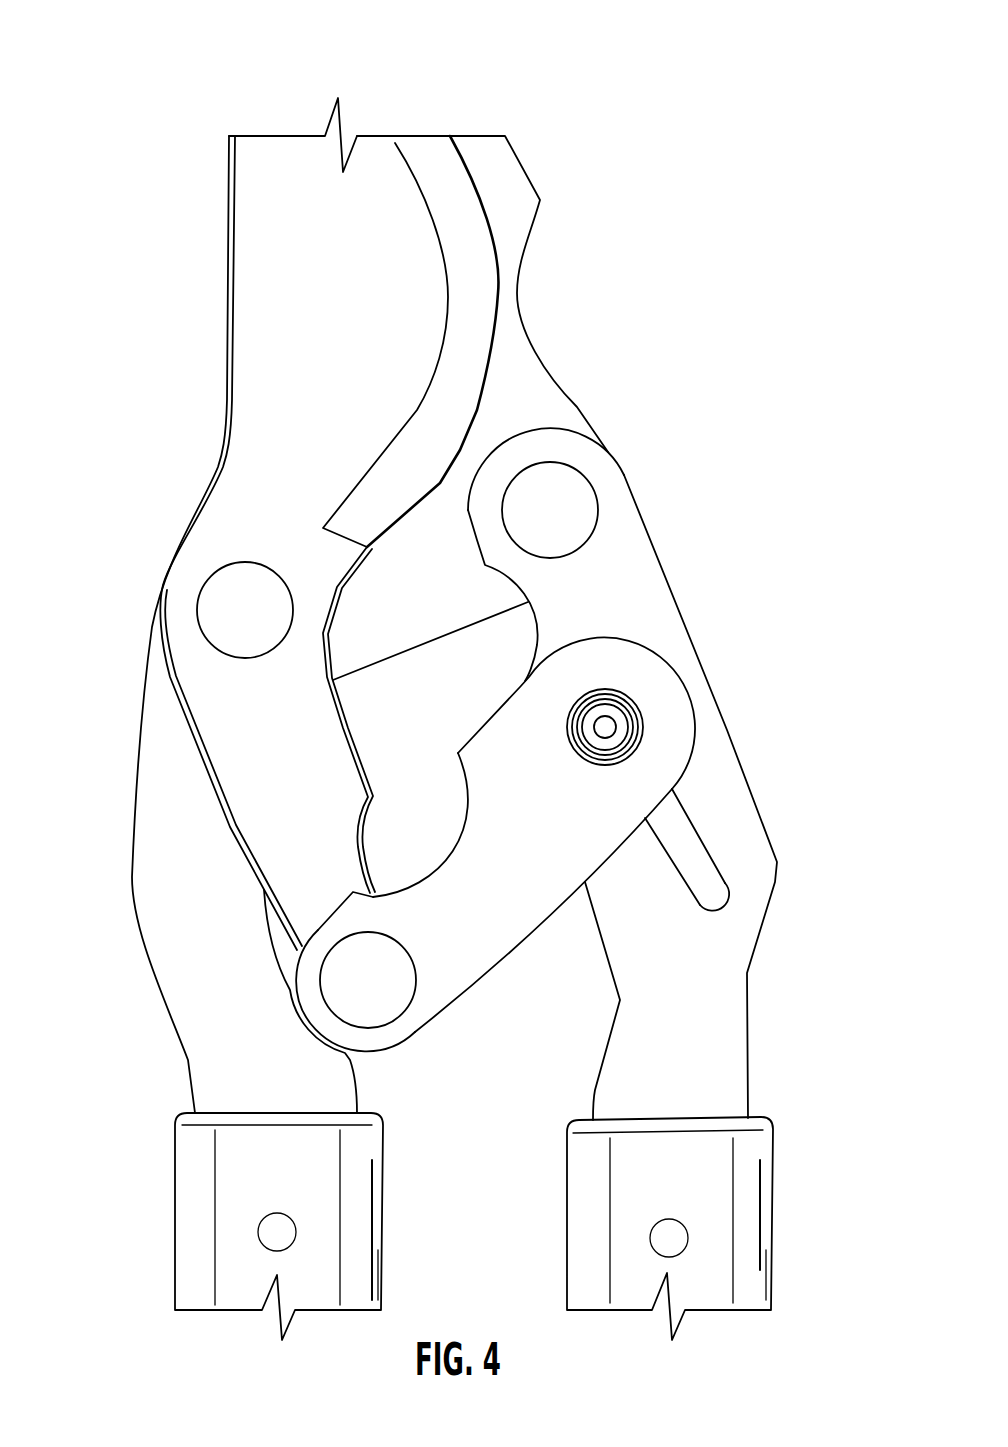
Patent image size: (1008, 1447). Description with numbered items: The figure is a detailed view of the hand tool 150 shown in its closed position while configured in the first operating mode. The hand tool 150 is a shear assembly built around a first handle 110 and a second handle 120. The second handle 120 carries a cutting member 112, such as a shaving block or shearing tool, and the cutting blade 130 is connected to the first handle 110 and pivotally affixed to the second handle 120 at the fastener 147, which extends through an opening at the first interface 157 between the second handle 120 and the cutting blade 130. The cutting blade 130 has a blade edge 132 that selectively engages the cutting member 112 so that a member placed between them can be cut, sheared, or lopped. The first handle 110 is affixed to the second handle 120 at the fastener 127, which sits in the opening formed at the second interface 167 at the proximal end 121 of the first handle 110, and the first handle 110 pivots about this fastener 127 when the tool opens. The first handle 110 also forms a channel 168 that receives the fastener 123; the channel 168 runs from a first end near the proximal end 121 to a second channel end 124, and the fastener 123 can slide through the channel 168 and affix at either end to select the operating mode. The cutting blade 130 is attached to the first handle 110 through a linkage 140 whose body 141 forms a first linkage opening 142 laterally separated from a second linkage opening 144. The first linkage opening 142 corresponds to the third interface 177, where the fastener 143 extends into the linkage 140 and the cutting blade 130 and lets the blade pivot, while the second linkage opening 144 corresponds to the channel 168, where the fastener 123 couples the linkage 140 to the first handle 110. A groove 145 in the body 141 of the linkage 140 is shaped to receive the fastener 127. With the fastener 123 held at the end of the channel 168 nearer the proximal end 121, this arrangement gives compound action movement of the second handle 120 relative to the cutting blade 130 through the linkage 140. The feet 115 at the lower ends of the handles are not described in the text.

The hand tool 150 is at (465, 670).
The cutting member 112 is at (482, 155).
The blade edge 132 is at (494, 218).
The cutting blade 130 is at (304, 524).
The proximal end 121 is at (589, 430).
The second interface 167 is at (606, 450).
The fastener 127 is at (565, 512).
The first interface 157 is at (186, 560).
The fastener 147 is at (238, 622).
The fastener 123 is at (677, 689).
The second linkage opening 144 is at (645, 734).
The groove 145 is at (443, 860).
The channel 168 is at (744, 865).
The second handle 120 is at (237, 630).
The second channel end 124 is at (713, 908).
The first linkage opening 142 is at (281, 1008).
The fastener 143 is at (393, 992).
The linkage 140 is at (466, 849).
The body 141 is at (545, 935).
The third interface 177 is at (364, 1040).
The first handle 110 is at (612, 595).
The foot 115 is at (203, 1240).